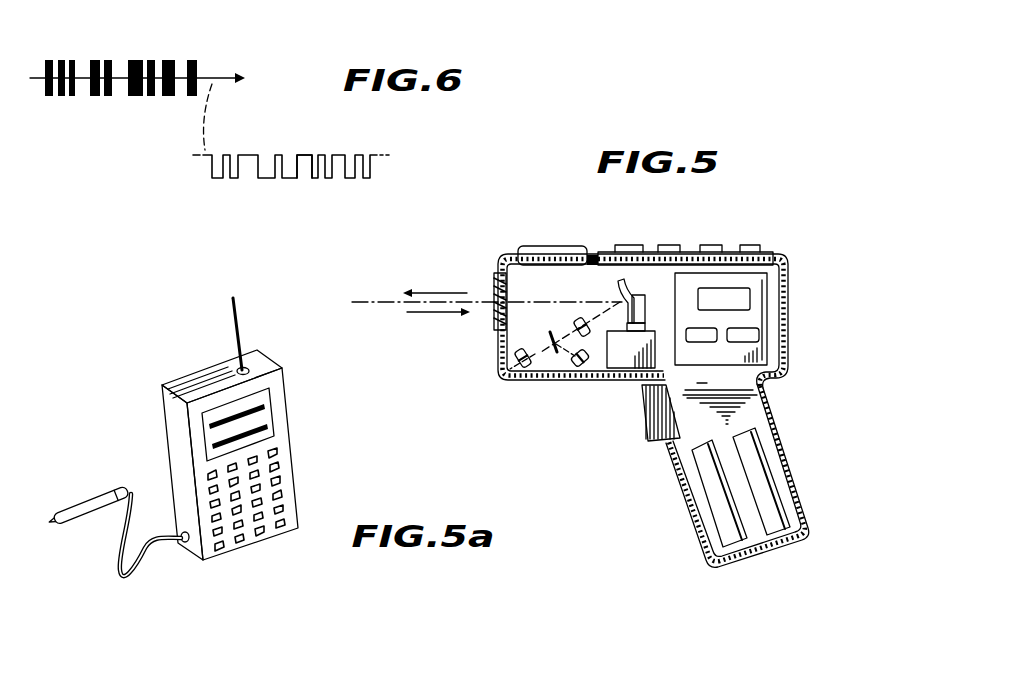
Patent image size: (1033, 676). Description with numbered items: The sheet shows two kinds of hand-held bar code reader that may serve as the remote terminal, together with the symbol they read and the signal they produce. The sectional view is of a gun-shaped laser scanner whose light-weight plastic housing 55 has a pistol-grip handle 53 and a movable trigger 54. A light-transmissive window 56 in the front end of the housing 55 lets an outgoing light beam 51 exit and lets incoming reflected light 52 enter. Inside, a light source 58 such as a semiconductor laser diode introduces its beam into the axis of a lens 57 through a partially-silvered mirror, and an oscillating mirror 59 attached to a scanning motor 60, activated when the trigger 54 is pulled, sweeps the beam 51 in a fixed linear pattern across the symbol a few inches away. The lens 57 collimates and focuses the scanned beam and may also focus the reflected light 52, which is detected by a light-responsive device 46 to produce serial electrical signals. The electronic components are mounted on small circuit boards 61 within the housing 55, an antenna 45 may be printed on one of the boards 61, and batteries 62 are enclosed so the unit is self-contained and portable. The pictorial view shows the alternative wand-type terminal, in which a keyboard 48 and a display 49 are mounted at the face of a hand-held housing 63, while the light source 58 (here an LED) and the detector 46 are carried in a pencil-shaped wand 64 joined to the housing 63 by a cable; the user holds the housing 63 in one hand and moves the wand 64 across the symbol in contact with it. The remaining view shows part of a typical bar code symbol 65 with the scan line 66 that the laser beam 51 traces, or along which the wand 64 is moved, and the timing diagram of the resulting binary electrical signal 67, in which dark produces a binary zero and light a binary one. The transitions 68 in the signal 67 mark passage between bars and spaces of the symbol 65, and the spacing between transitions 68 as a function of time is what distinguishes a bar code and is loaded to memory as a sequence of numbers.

In FIG. 5A, the antenna 45 is at (232, 314).
In FIG. 5, the light-responsive device 46 is at (521, 368).
In FIG. 5, the keyboard 48 is at (727, 253).
In FIG. 5A, the keyboard 48 is at (292, 485).
In FIG. 5, the display 49 is at (553, 247).
In FIG. 5A, the display 49 is at (268, 412).
In FIG. 5, the outgoing light beam 51 is at (428, 290).
In FIG. 5, the reflected light 52 is at (443, 314).
In FIG. 5, the handle 53 is at (688, 493).
In FIG. 5, the trigger 54 is at (652, 421).
In FIG. 5, the housing 55 is at (789, 361).
In FIG. 5, the light-transmissive window 56 is at (499, 276).
In FIG. 5, the lens 57 is at (578, 319).
In FIG. 5, the light source 58 is at (572, 373).
In FIG. 5, the oscillating mirror 59 is at (621, 282).
In FIG. 5, the scanning motor 60 is at (622, 357).
In FIG. 5, the circuit boards 61 is at (766, 292).
In FIG. 5, the batteries 62 is at (757, 512).
In FIG. 5A, the hand-held housing 63 is at (175, 428).
In FIG. 5A, the pencil-shaped wand 64 is at (68, 511).
In FIG. 6, the bar code symbol 65 is at (99, 51).
In FIG. 6, the scan line 66 is at (219, 71).
In FIG. 6, the binary electrical signal 67 is at (287, 146).
In FIG. 6, the transitions 68 is at (302, 167).